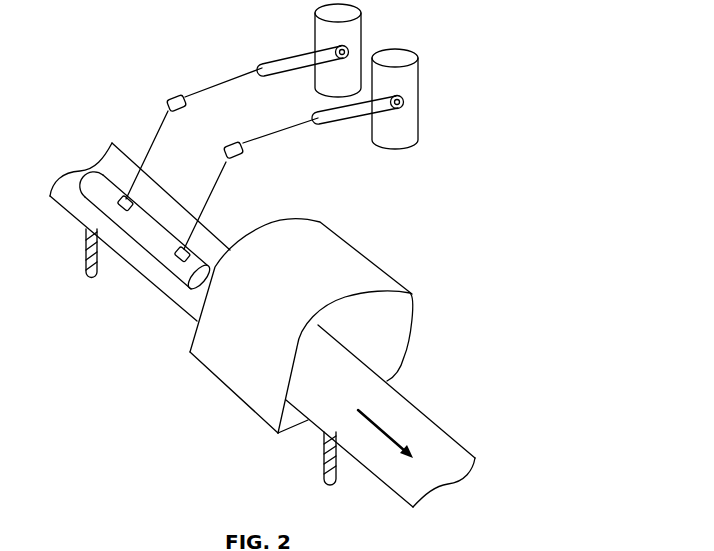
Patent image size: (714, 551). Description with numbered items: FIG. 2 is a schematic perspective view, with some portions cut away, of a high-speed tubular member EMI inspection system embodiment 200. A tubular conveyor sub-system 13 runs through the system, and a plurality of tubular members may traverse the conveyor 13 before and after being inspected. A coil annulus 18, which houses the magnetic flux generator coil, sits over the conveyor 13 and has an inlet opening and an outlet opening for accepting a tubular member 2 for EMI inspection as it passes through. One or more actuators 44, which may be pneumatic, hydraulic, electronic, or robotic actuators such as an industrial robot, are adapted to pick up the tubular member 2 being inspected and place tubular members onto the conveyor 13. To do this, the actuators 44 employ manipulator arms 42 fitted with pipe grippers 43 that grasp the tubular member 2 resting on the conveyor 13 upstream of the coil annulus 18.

The high-speed EMI inspection system embodiment 200 is at (526, 26).
The tubular conveyor sub-system 13 is at (380, 479).
The coil annulus 18 is at (365, 261).
The tubular member 2 is at (133, 228).
The pipe grippers 43 is at (90, 230).
The manipulator arms 42 is at (218, 83).
The actuators 44 is at (361, 24).